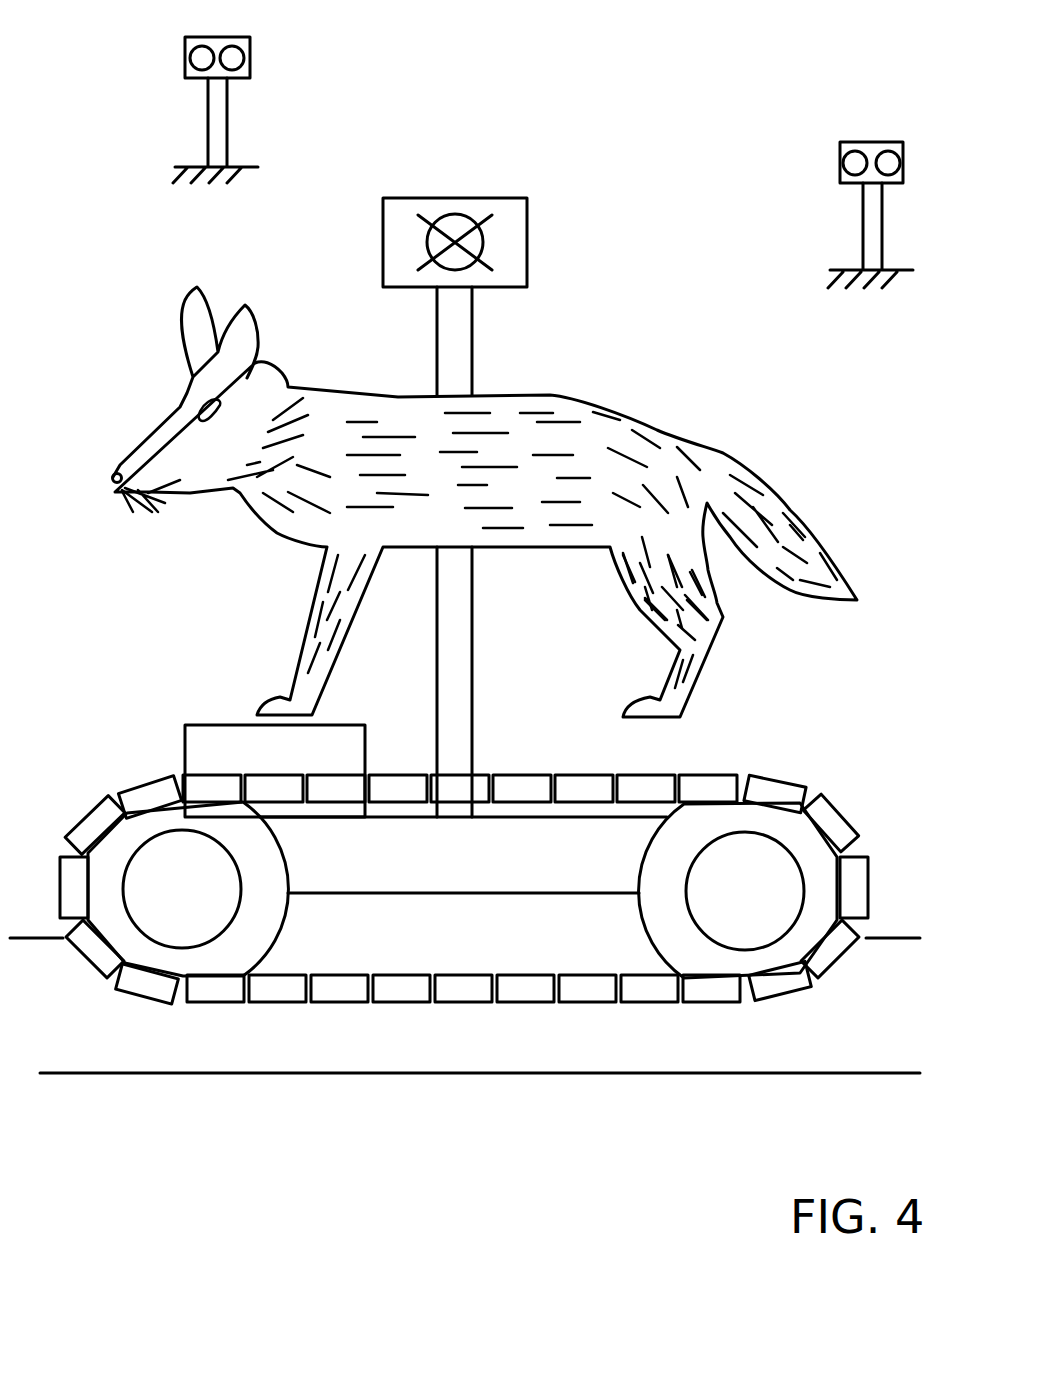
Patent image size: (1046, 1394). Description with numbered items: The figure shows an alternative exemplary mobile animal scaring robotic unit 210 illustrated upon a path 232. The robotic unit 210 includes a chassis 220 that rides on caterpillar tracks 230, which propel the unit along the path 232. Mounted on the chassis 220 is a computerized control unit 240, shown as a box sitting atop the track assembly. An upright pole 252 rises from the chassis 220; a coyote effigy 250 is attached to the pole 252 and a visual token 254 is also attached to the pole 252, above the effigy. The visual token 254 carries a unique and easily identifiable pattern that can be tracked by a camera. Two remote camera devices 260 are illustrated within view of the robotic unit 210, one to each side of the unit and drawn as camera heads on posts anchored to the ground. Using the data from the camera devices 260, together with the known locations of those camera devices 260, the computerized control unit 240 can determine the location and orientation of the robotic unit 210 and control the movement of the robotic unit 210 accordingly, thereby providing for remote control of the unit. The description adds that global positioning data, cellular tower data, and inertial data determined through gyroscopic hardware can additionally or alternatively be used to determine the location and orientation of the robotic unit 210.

The robotic unit 210 is at (138, 662).
The chassis 220 is at (610, 842).
The caterpillar tracks 230 is at (458, 1002).
The path 232 is at (78, 1028).
The computerized control unit 240 is at (197, 757).
The coyote effigy 250 is at (683, 435).
The pole 252 is at (473, 357).
The visual token 254 is at (527, 215).
The remote camera devices 260 is at (250, 53).